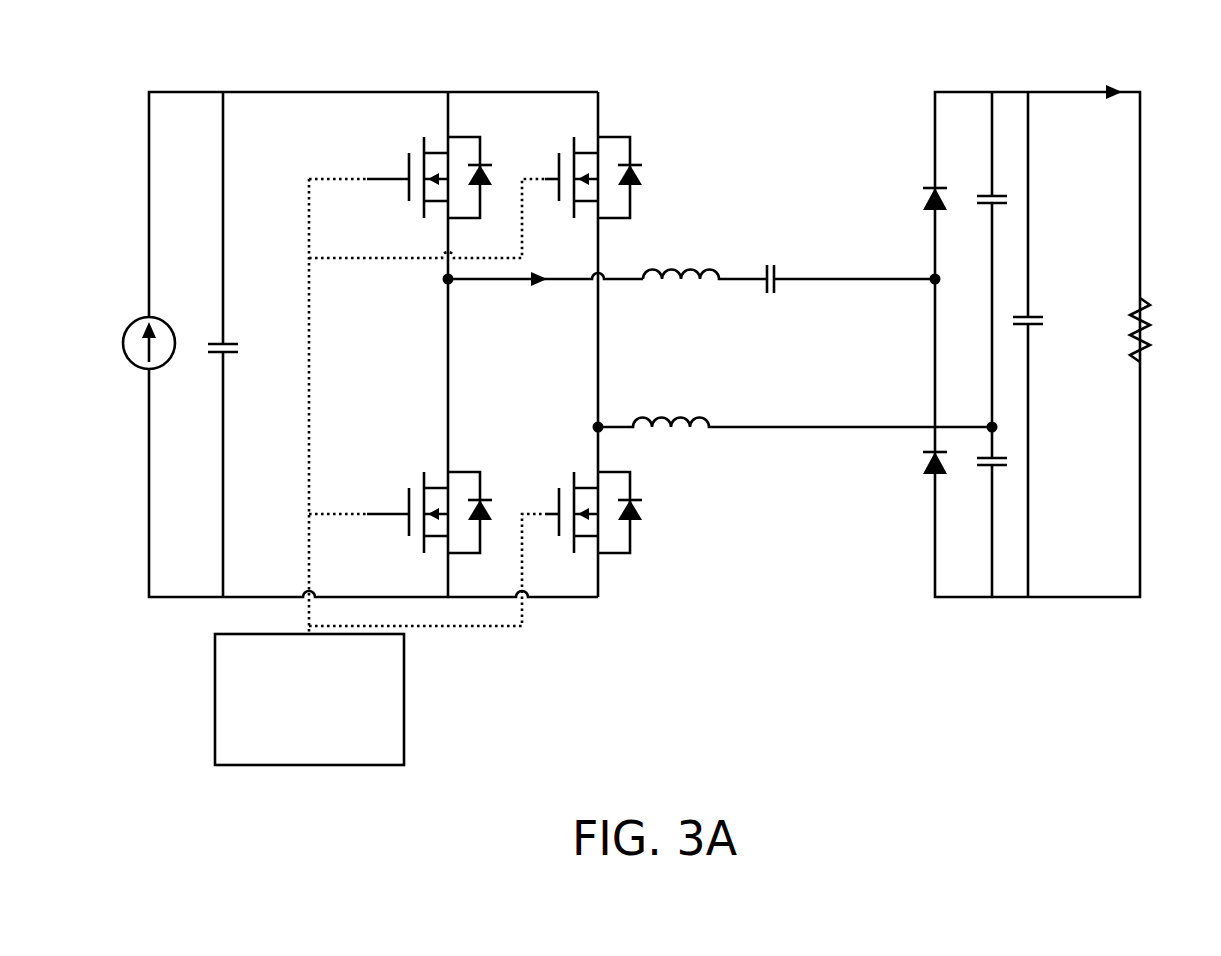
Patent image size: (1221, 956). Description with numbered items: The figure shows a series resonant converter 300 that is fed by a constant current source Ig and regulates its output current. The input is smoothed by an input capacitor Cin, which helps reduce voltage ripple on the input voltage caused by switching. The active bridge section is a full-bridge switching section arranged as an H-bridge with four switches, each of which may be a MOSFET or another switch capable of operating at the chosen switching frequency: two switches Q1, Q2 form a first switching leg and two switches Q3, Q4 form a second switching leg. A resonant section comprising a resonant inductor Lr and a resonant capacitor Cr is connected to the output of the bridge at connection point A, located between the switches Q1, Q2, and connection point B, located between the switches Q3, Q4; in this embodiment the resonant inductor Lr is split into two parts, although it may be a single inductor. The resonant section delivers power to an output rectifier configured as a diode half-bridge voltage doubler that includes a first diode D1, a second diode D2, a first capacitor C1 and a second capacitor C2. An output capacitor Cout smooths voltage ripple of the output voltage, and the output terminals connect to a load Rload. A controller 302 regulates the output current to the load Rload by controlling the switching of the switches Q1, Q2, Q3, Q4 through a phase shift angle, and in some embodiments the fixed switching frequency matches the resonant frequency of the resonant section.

The series resonant converter 300 is at (188, 57).
The controller 302 is at (309, 699).
The switch Q1 is at (428, 177).
The switch Q2 is at (428, 510).
The switch Q3 is at (574, 177).
The switch Q4 is at (571, 510).
The first diode D1 is at (919, 212).
The second diode D2 is at (919, 475).
The first capacitor C1 is at (984, 259).
The second capacitor C2 is at (984, 512).
The input capacitor Cin is at (239, 344).
The output capacitor Cout is at (1041, 344).
The resonant capacitor Cr is at (845, 268).
The resonant inductor Lr is at (795, 337).
The load Rload is at (1163, 330).
The constant current source Ig is at (154, 330).